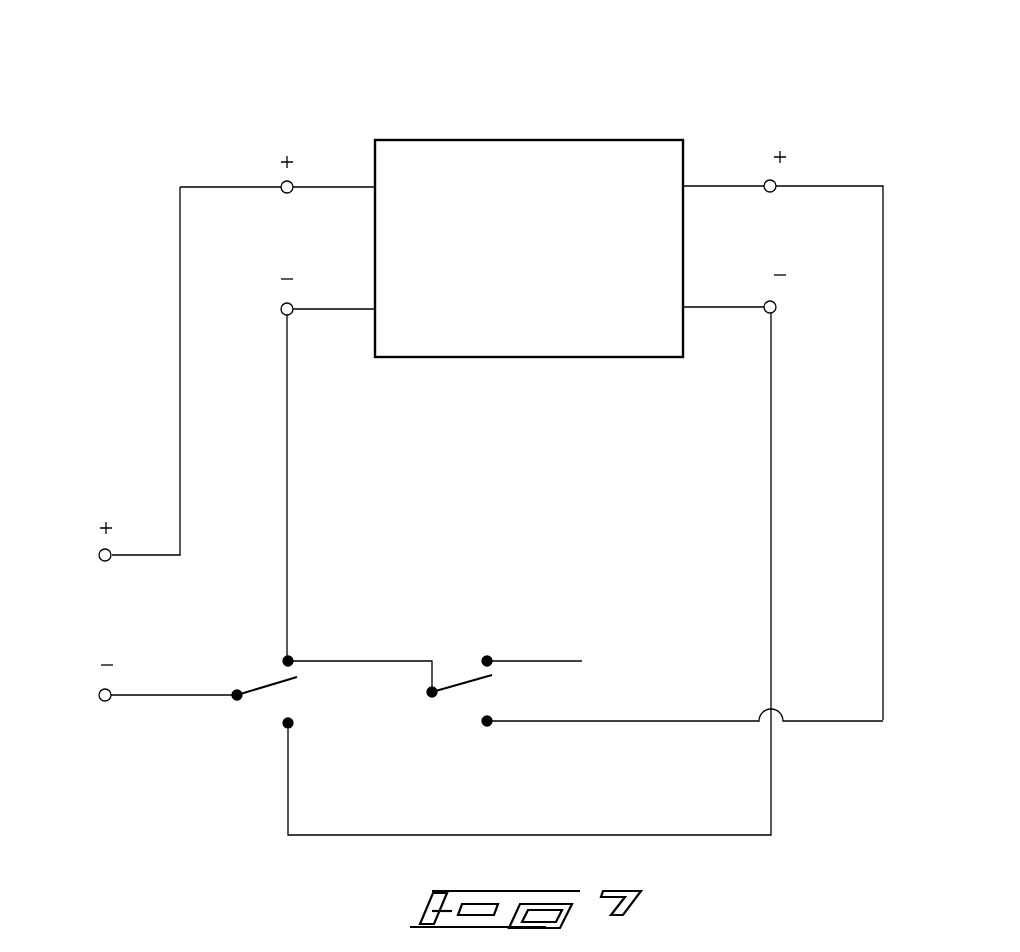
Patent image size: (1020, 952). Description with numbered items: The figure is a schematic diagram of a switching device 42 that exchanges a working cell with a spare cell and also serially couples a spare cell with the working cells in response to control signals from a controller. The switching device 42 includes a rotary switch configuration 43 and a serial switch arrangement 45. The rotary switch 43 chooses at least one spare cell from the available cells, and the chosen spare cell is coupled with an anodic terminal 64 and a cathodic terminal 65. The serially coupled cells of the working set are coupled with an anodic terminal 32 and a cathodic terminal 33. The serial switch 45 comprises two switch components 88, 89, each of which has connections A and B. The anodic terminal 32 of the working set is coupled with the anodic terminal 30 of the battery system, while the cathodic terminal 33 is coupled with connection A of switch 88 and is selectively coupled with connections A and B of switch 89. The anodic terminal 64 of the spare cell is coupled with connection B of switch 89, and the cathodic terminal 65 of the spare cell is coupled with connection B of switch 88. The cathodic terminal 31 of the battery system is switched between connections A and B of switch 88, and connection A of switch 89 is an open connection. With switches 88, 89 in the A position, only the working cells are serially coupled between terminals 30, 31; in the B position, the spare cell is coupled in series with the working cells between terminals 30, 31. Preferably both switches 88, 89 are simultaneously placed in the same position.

The switching device 42 is at (166, 66).
The rotary switch configuration 43 is at (570, 139).
The anodic terminal 32 is at (331, 184).
The cathodic terminal 33 is at (330, 311).
The anodic terminal 64 is at (722, 183).
The cathodic terminal 65 is at (727, 315).
The anodic terminal 30 is at (146, 553).
The cathodic terminal 31 is at (152, 697).
The serial switch arrangement 45 is at (351, 556).
The switch component 88 is at (241, 631).
The switch component 89 is at (441, 631).